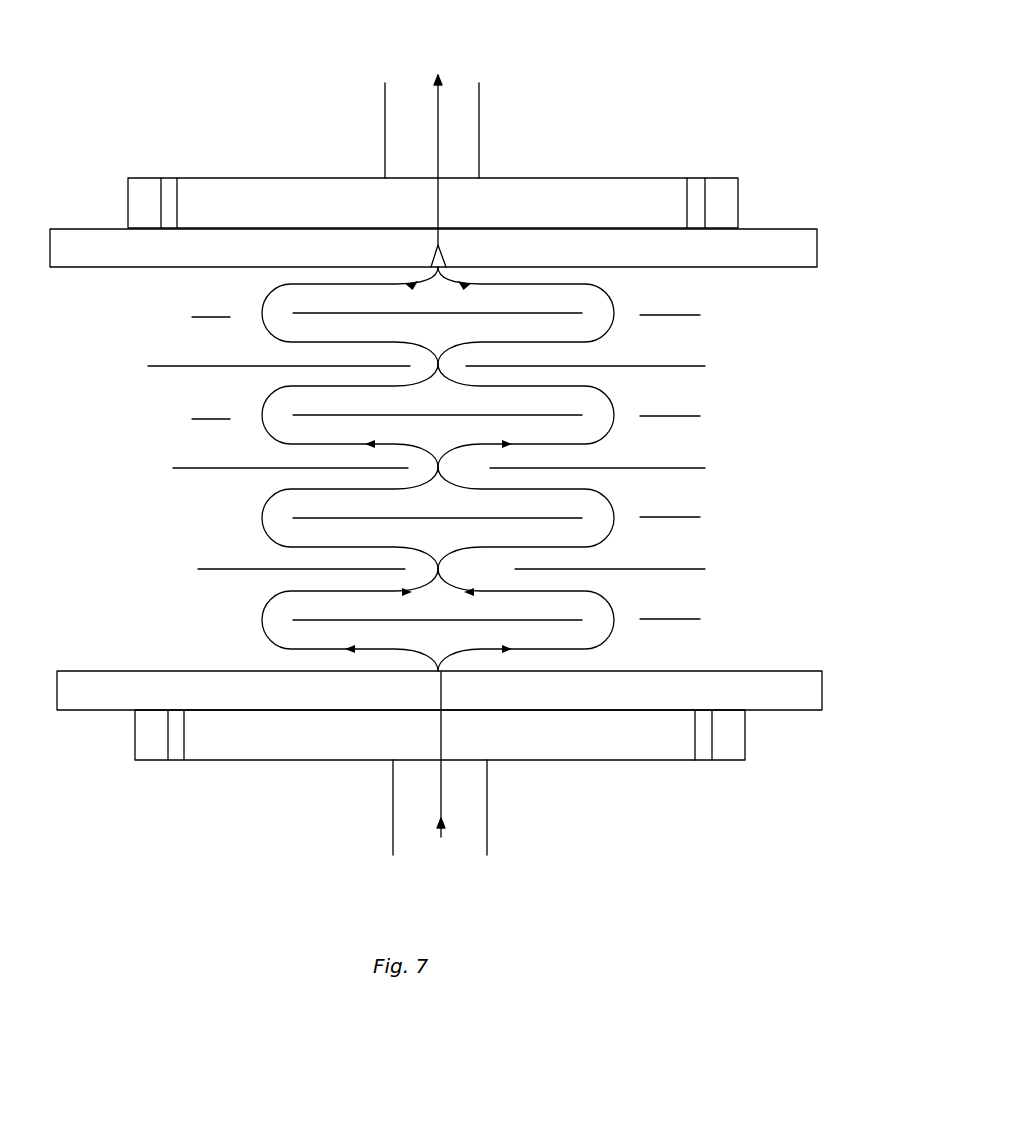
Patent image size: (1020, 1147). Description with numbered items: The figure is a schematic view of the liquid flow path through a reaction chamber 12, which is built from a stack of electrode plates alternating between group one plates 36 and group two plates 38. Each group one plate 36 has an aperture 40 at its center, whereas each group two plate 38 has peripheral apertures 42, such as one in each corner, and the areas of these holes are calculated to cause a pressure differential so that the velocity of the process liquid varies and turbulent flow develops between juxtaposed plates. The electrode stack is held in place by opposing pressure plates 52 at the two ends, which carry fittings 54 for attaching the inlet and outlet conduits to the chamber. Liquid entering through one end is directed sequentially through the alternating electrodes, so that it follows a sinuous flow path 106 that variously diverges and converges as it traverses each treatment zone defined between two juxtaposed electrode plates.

The reaction chamber 12 is at (597, 105).
The group one plates 36 is at (675, 364).
The group two plates 38 is at (687, 315).
The aperture 40 is at (428, 569).
The apertures 42 is at (255, 315).
The pressure plates 52 is at (567, 183).
The fittings 54 is at (470, 130).
The flow path 106 is at (262, 498).